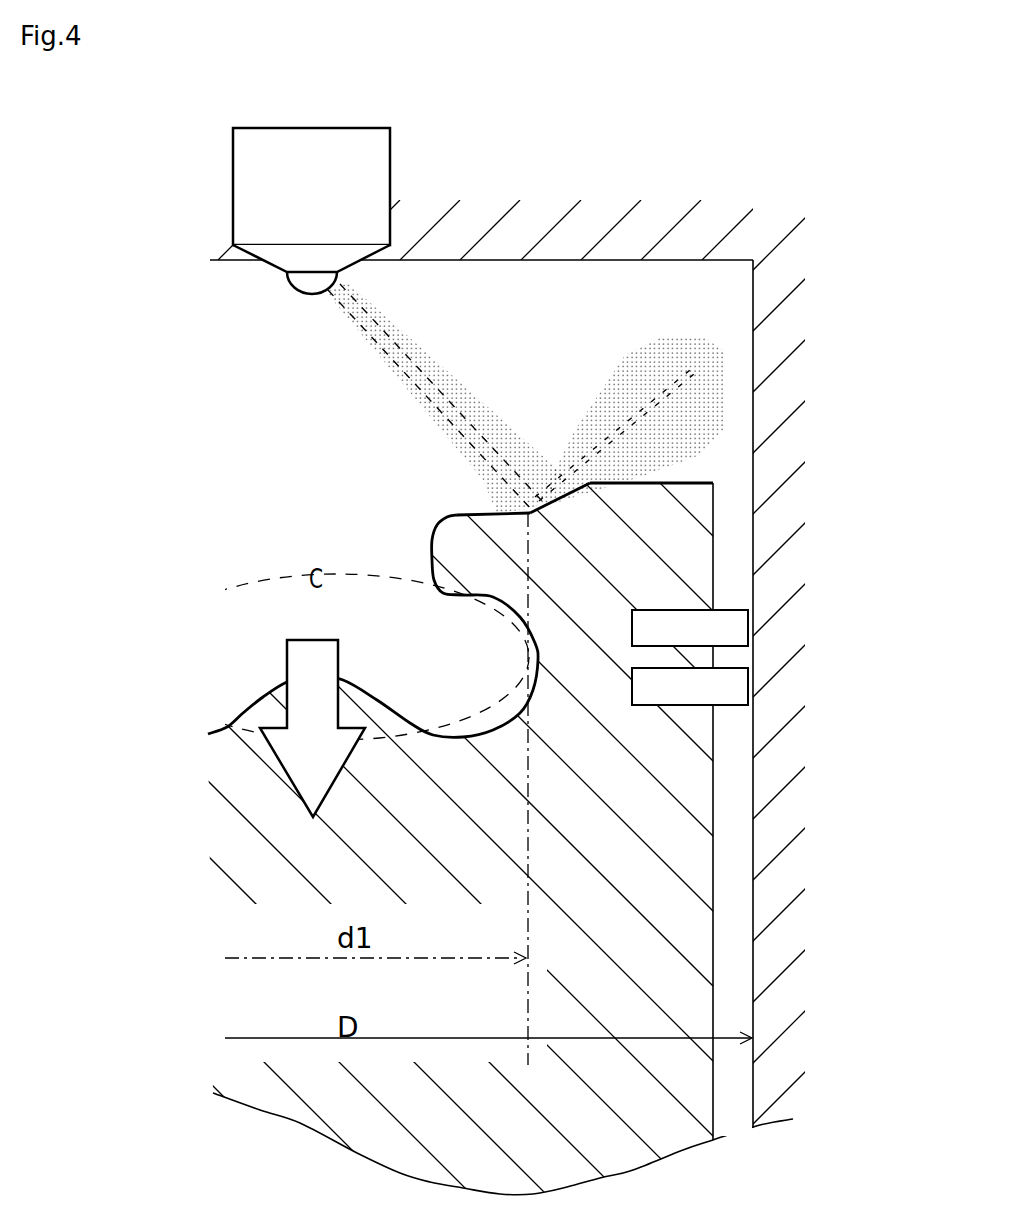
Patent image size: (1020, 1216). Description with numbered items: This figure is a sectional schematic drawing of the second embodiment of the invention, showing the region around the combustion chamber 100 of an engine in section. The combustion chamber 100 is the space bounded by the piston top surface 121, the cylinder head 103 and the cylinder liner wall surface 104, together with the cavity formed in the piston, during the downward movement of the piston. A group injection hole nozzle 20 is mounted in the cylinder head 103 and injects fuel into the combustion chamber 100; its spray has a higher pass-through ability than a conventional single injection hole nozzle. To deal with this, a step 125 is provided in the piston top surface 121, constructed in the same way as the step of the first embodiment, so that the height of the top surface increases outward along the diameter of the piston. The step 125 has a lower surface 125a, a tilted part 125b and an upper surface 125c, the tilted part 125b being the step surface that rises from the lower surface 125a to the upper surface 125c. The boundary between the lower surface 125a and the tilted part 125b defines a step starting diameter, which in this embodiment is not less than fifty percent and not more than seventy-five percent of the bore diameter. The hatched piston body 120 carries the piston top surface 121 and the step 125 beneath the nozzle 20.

The group injection hole nozzle 20 is at (390, 175).
The cylinder head 103 is at (228, 262).
The cylinder liner wall surface 104 is at (753, 313).
The piston top surface 121 is at (683, 458).
The step 125 is at (550, 472).
The lower surface 125a is at (460, 513).
The tilted part 125b is at (566, 485).
The upper surface 125c is at (680, 483).
The combustion chamber 100 is at (342, 452).
The body 120 is at (445, 840).